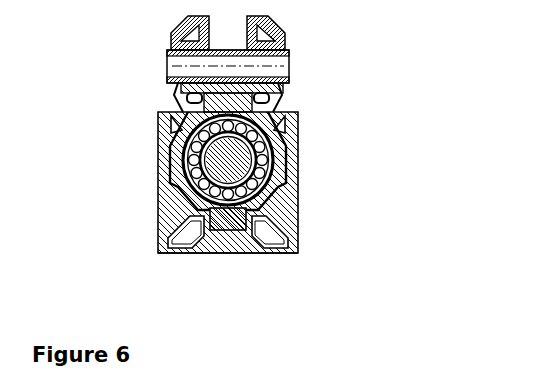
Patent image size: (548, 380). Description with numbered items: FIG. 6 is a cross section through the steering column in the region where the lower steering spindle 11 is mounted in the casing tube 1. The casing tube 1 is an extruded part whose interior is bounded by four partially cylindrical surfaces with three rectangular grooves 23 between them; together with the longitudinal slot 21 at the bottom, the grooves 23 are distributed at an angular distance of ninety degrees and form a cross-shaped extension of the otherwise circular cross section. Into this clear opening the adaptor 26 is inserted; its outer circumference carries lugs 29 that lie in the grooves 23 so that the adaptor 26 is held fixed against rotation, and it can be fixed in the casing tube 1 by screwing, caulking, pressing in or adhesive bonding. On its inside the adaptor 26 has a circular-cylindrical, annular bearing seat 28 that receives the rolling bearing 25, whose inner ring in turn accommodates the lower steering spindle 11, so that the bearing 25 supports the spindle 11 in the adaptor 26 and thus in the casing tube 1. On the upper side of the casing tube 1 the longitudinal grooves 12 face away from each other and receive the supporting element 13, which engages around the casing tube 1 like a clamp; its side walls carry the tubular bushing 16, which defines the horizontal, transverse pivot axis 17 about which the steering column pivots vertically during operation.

The casing tube 1 is at (300, 230).
The lower steering spindle 11 is at (183, 227).
The longitudinal grooves 12 is at (290, 112).
The supporting element 13 is at (284, 29).
The tubular bushing 16 is at (290, 50).
The pivot axis 17 is at (290, 68).
The longitudinal slot 21 is at (238, 236).
The rectangular grooves 23 is at (168, 181).
The rolling bearing 25 is at (273, 176).
The adaptor 26 is at (168, 72).
The bearing seat 28 is at (236, 210).
The lugs 29 is at (183, 100).